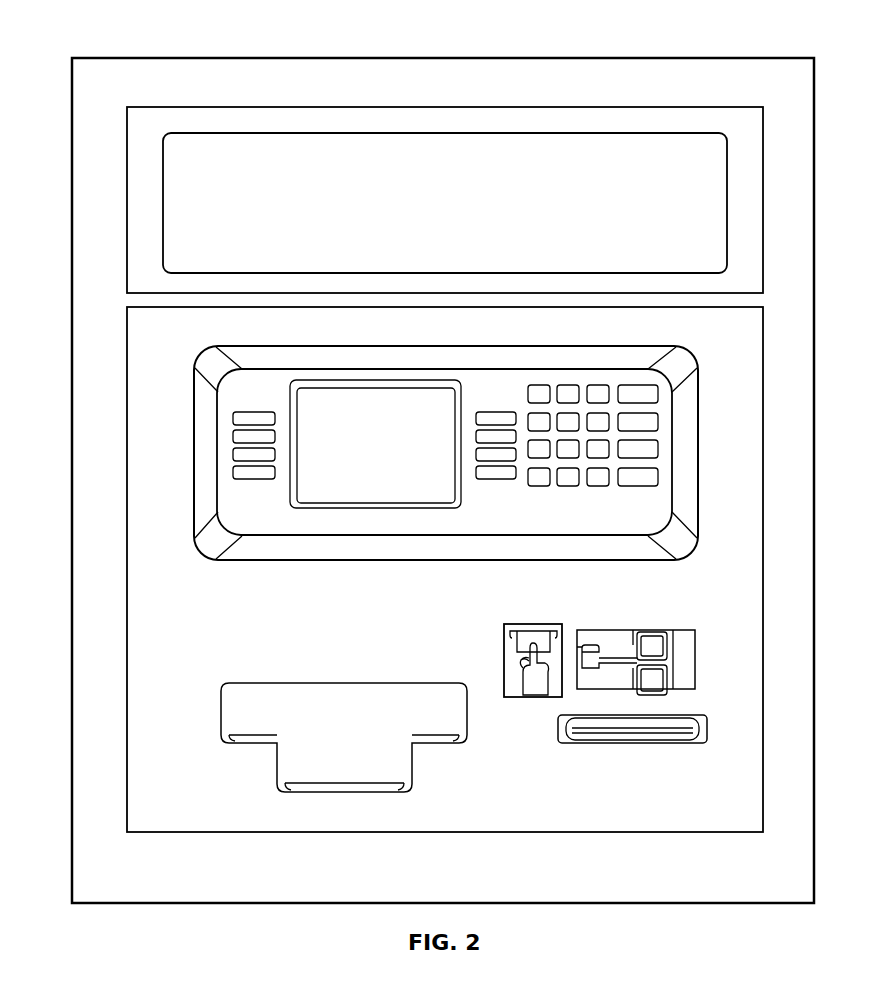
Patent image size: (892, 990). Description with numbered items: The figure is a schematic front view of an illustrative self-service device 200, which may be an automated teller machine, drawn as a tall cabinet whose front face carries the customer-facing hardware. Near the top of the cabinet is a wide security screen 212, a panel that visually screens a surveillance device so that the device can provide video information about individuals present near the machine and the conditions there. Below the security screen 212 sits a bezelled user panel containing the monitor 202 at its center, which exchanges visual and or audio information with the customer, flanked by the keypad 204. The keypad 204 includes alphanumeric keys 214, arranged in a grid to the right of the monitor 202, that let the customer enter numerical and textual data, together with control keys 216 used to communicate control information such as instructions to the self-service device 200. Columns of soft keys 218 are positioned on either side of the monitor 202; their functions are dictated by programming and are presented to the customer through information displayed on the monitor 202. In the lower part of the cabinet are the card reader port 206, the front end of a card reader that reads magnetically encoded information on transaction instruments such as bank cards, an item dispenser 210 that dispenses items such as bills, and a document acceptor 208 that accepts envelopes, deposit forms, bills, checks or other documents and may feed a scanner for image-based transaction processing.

The self-service device 200 is at (124, 28).
The monitor 202 is at (400, 383).
The keypad 204 is at (490, 522).
The card reader port 206 is at (682, 628).
The document acceptor 208 is at (693, 715).
The item dispenser 210 is at (245, 682).
The security screen 212 is at (655, 132).
The alphanumeric keys 214 is at (542, 492).
The control keys 216 is at (593, 426).
The soft keys 218 is at (258, 400).